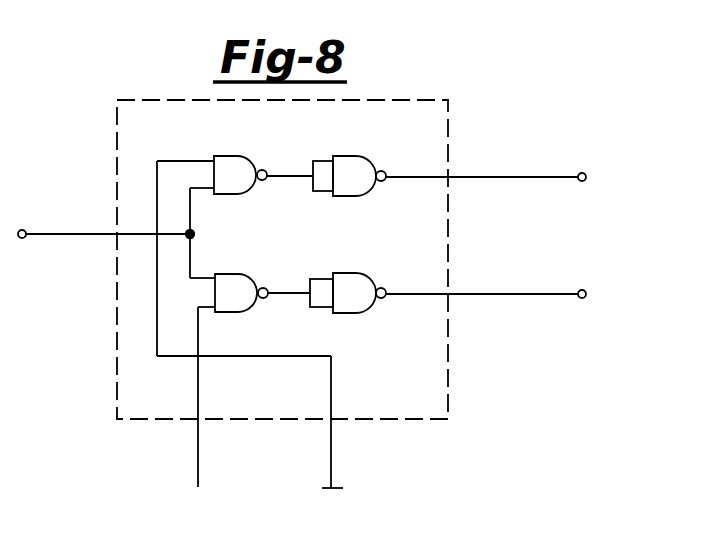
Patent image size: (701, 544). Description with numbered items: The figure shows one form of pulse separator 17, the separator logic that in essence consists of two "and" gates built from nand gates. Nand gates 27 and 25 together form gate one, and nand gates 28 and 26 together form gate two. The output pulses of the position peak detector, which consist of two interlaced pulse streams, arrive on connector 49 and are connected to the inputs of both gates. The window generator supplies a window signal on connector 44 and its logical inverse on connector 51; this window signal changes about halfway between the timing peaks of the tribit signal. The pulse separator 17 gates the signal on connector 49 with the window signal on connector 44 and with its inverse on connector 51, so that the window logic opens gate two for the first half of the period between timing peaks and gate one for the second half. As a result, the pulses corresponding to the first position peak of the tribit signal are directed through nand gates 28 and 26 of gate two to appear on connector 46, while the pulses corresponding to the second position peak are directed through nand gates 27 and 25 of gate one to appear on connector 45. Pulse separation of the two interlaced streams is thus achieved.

The pulse separator 17 is at (440, 404).
The nand gate 25 is at (348, 157).
The nand gate 26 is at (352, 273).
The nand gate 27 is at (222, 156).
The nand gate 28 is at (222, 274).
The connector 44 is at (198, 447).
The connector 45 is at (523, 177).
The connector 46 is at (510, 294).
The connector 49 is at (108, 234).
The connector 51 is at (334, 452).